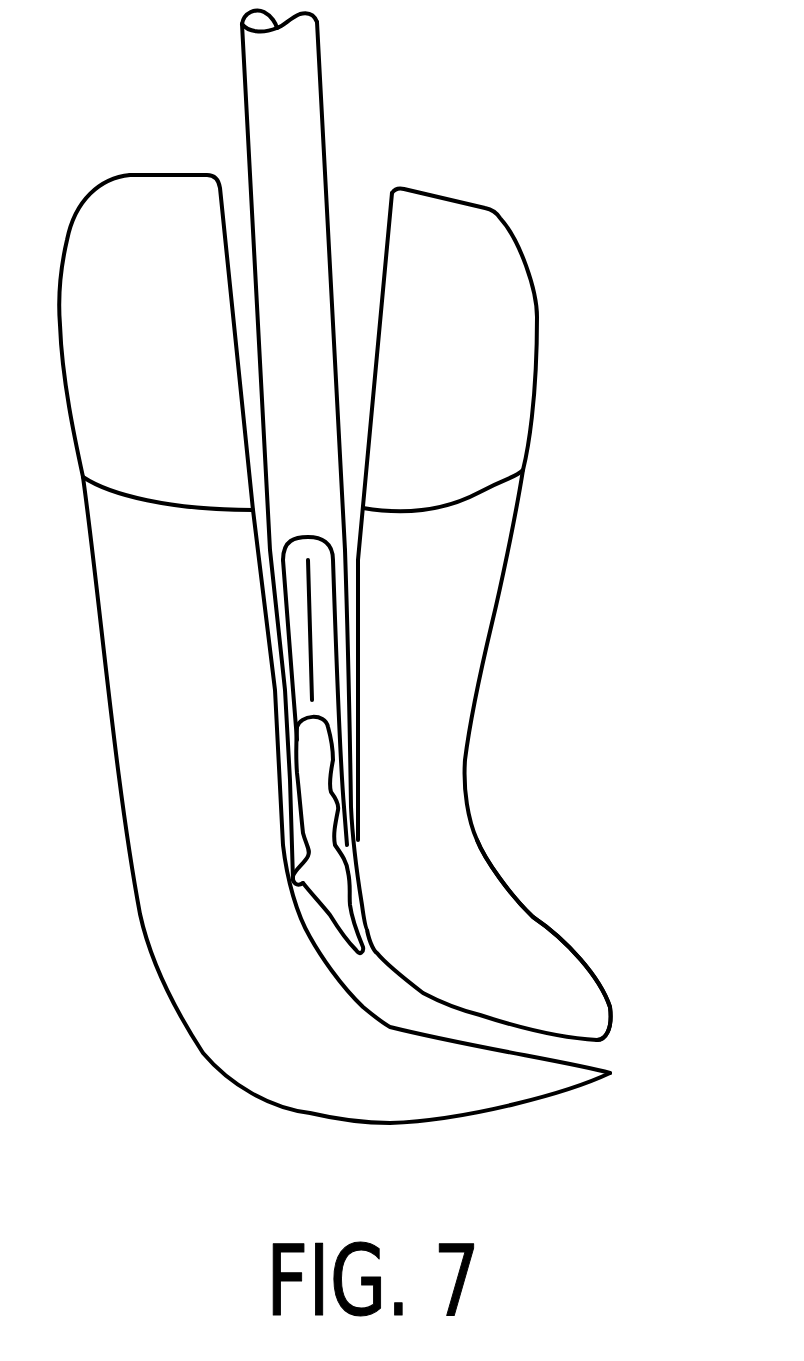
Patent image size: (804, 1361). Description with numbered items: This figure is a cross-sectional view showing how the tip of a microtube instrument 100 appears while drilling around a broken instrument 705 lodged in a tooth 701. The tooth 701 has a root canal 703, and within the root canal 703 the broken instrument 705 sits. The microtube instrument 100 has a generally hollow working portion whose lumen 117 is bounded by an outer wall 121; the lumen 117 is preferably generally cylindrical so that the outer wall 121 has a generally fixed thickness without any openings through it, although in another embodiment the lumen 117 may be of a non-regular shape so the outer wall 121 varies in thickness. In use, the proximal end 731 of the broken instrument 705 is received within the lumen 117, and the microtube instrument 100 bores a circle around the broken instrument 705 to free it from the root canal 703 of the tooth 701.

The microtube instrument 100 is at (302, 115).
The tooth 701 is at (517, 350).
The root canal 703 is at (420, 1005).
The broken instrument 705 is at (303, 880).
The proximal end 731 is at (313, 715).
The outer wall 121 is at (338, 638).
The lumen 117 is at (318, 668).